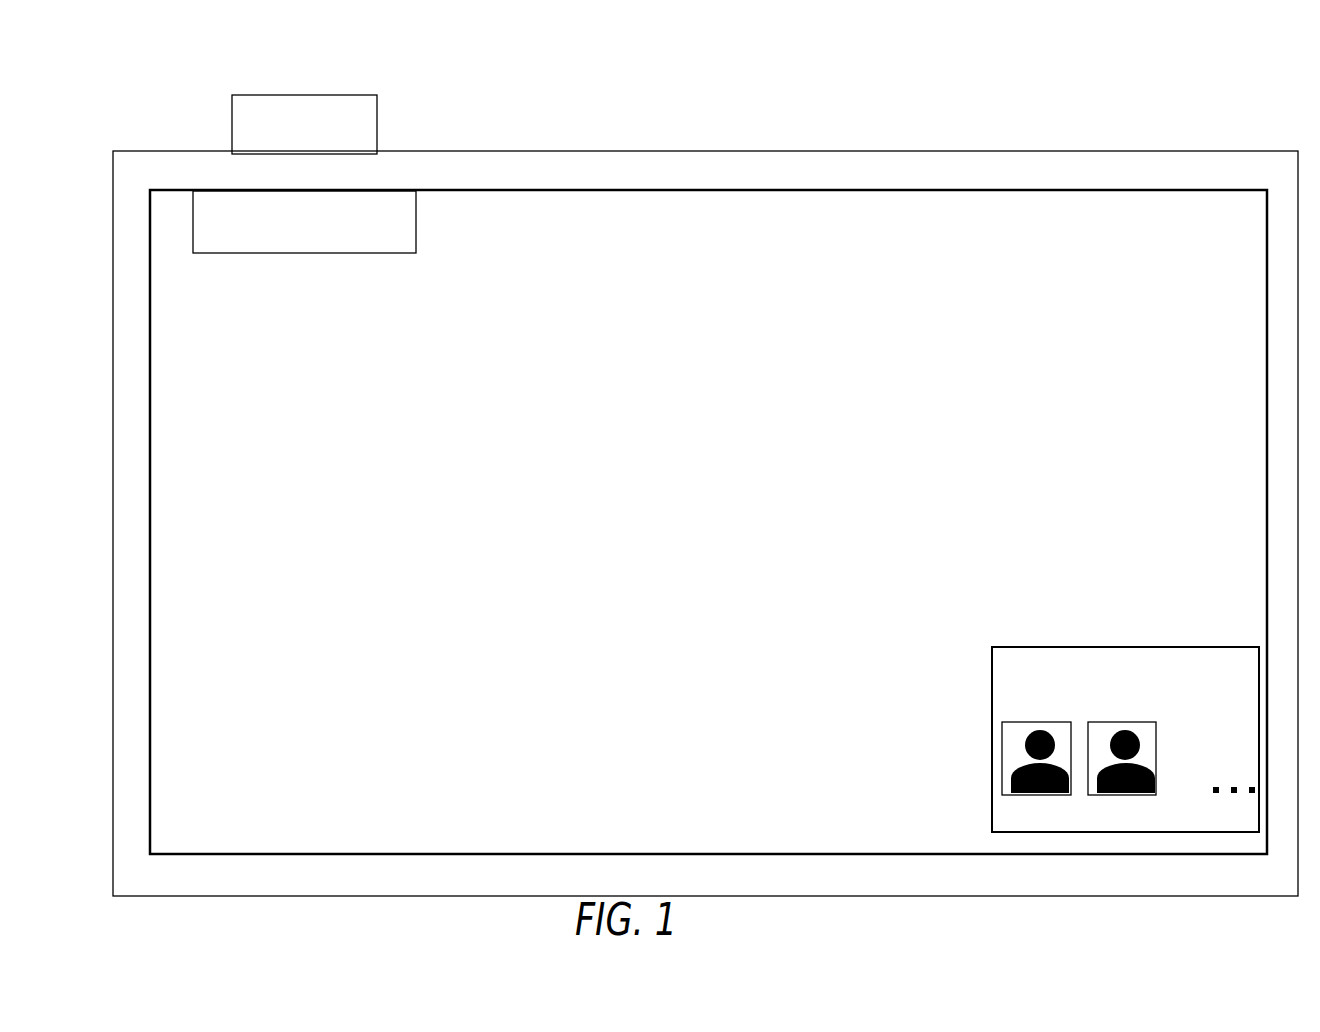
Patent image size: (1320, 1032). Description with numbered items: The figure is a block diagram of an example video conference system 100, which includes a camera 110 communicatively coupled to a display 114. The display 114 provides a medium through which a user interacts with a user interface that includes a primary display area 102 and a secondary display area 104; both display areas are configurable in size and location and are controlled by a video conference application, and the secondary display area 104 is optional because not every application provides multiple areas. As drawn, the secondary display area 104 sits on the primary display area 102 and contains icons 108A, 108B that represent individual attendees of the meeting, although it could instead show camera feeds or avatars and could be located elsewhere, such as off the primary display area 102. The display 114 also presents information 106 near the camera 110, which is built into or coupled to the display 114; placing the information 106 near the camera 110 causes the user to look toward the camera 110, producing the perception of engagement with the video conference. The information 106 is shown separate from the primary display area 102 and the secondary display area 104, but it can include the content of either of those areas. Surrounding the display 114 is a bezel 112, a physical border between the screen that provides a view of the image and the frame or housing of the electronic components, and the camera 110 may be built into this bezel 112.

The video conference system 100 is at (86, 92).
The primary display area 102 is at (1080, 195).
The secondary display area 104 is at (1023, 650).
The information 106 is at (385, 197).
The icon 108A is at (1008, 797).
The icon 108B is at (1102, 797).
The camera 110 is at (377, 133).
The bezel 112 is at (964, 167).
The display 114 is at (823, 153).